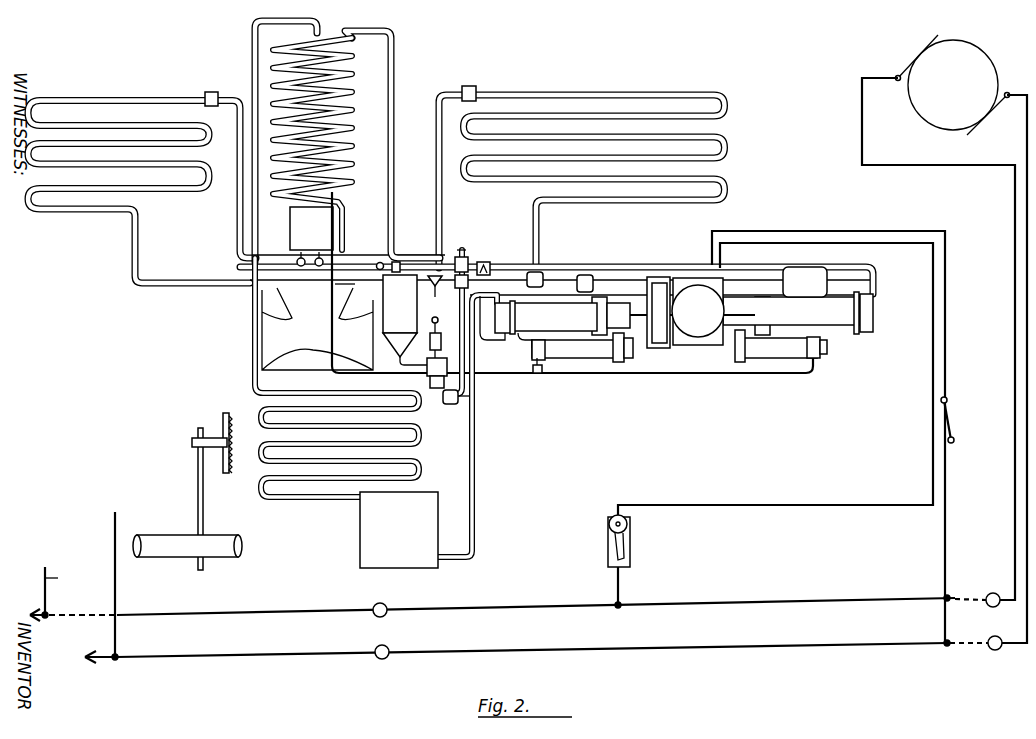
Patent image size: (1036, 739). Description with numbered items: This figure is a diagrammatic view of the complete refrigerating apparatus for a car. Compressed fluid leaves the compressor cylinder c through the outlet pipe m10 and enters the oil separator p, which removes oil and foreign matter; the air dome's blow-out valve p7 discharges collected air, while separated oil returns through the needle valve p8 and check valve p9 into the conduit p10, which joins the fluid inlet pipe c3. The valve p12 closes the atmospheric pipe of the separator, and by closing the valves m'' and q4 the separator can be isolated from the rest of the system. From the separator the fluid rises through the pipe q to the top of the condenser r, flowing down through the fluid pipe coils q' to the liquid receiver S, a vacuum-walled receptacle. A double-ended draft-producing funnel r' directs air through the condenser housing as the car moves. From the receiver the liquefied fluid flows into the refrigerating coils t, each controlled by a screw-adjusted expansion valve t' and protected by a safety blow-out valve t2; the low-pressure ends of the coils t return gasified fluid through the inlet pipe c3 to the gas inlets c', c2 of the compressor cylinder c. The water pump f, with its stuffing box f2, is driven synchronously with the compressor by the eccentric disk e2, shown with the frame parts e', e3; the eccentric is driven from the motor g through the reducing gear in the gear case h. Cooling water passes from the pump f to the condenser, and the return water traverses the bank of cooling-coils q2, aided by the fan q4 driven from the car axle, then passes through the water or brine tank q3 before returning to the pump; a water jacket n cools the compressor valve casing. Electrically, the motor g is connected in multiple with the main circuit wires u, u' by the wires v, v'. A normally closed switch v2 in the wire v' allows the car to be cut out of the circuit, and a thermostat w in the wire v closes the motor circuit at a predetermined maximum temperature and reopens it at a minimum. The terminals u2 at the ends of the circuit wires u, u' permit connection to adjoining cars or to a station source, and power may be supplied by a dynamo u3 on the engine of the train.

The refrigerating coils t is at (397, 174).
The safety blow-out valve t2 is at (211, 90).
The condenser r is at (348, 133).
The draft-producing funnel r' is at (317, 329).
The pipe q is at (392, 144).
The fluid pipe coils q' is at (325, 144).
The cooling-coils q2 is at (422, 456).
The water or brine tank q3 is at (399, 530).
The fan q4 is at (398, 262).
The liquid receiver S is at (311, 228).
The expansion valve t' is at (320, 246).
The oil separator p is at (405, 320).
The valve p'' is at (396, 278).
The blow-out valve p7 is at (438, 331).
The needle valve p8 is at (433, 390).
The check valve p9 is at (459, 402).
The pipe or conduit p10 is at (474, 385).
The valve p12 is at (383, 283).
The valve m'' is at (472, 309).
The outlet pipe m10 is at (510, 264).
The compressor cylinder c is at (686, 314).
The gas inlet c' is at (681, 250).
The gas inlet c2 is at (603, 303).
The fluid inlet pipe c3 is at (558, 278).
The frame e' is at (655, 342).
The eccentric disk e2 is at (703, 342).
The frame e3 is at (660, 290).
The water pump f is at (674, 355).
The stuffing box f2 is at (627, 360).
The motor g is at (805, 282).
The gear case h is at (502, 326).
The water jacket n is at (876, 312).
The main circuit wire u is at (566, 360).
The main circuit wire u' is at (572, 376).
The terminals u2 is at (386, 603).
The dynamo u3 is at (953, 87).
The wire v is at (398, 544).
The wire v' is at (517, 587).
The switch v2 is at (951, 428).
The thermostat w is at (632, 541).